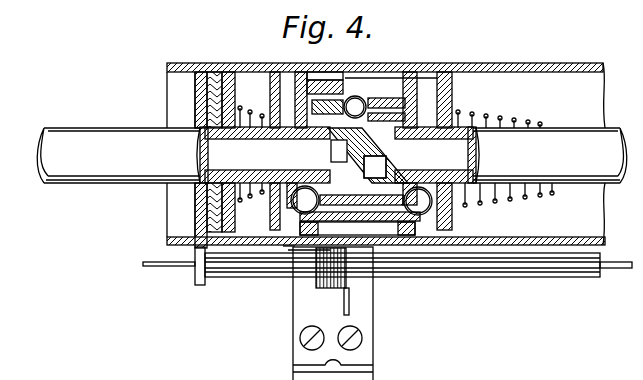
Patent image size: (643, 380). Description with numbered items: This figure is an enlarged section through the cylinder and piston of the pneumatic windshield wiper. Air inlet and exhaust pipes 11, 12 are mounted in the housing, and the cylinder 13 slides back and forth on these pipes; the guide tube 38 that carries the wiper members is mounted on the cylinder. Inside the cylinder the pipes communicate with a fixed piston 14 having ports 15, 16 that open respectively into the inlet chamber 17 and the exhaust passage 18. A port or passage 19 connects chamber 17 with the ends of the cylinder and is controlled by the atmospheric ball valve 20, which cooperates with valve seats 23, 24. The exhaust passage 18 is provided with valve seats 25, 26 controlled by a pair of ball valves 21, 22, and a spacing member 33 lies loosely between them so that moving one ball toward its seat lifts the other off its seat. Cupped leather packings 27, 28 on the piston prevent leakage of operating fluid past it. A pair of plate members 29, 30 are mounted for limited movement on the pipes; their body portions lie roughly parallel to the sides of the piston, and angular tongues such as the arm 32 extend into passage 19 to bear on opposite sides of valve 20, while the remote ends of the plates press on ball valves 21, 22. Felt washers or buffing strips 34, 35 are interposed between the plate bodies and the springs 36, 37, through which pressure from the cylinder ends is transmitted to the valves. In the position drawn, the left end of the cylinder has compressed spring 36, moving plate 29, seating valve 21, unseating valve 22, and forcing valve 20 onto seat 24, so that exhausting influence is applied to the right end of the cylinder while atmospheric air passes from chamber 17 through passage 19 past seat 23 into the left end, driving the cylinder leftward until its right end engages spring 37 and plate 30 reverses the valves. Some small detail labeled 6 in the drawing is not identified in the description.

The block 6 is at (340, 105).
The air inlet pipe 11 is at (78, 132).
The air exhaust pipe 12 is at (606, 130).
The cylinder 13 is at (338, 155).
The fixed piston 14 is at (322, 248).
The port 15 is at (368, 155).
The port 16 is at (375, 167).
The inlet chamber 17 is at (370, 97).
The exhaust passage 18 is at (400, 247).
The port or passage 19 is at (352, 97).
The valve 20 is at (404, 108).
The ball valve 21 is at (287, 248).
The ball valve 22 is at (425, 247).
The valve seat 23 is at (300, 105).
The valve seat 24 is at (372, 78).
The valve seat 25 is at (296, 250).
The valve seat 26 is at (433, 247).
The cupped leather packing 27 is at (306, 248).
The cupped leather packing 28 is at (413, 247).
The plate member 29 is at (275, 100).
The plate member 30 is at (445, 100).
The tongue or arm portion 32 is at (440, 75).
The spacing member 33 is at (376, 248).
The washer or buffing strip 34 is at (248, 102).
The washer or buffing strip 35 is at (503, 72).
The spring 36 is at (251, 146).
The spring 37 is at (280, 105).
The guide tube 38 is at (596, 277).